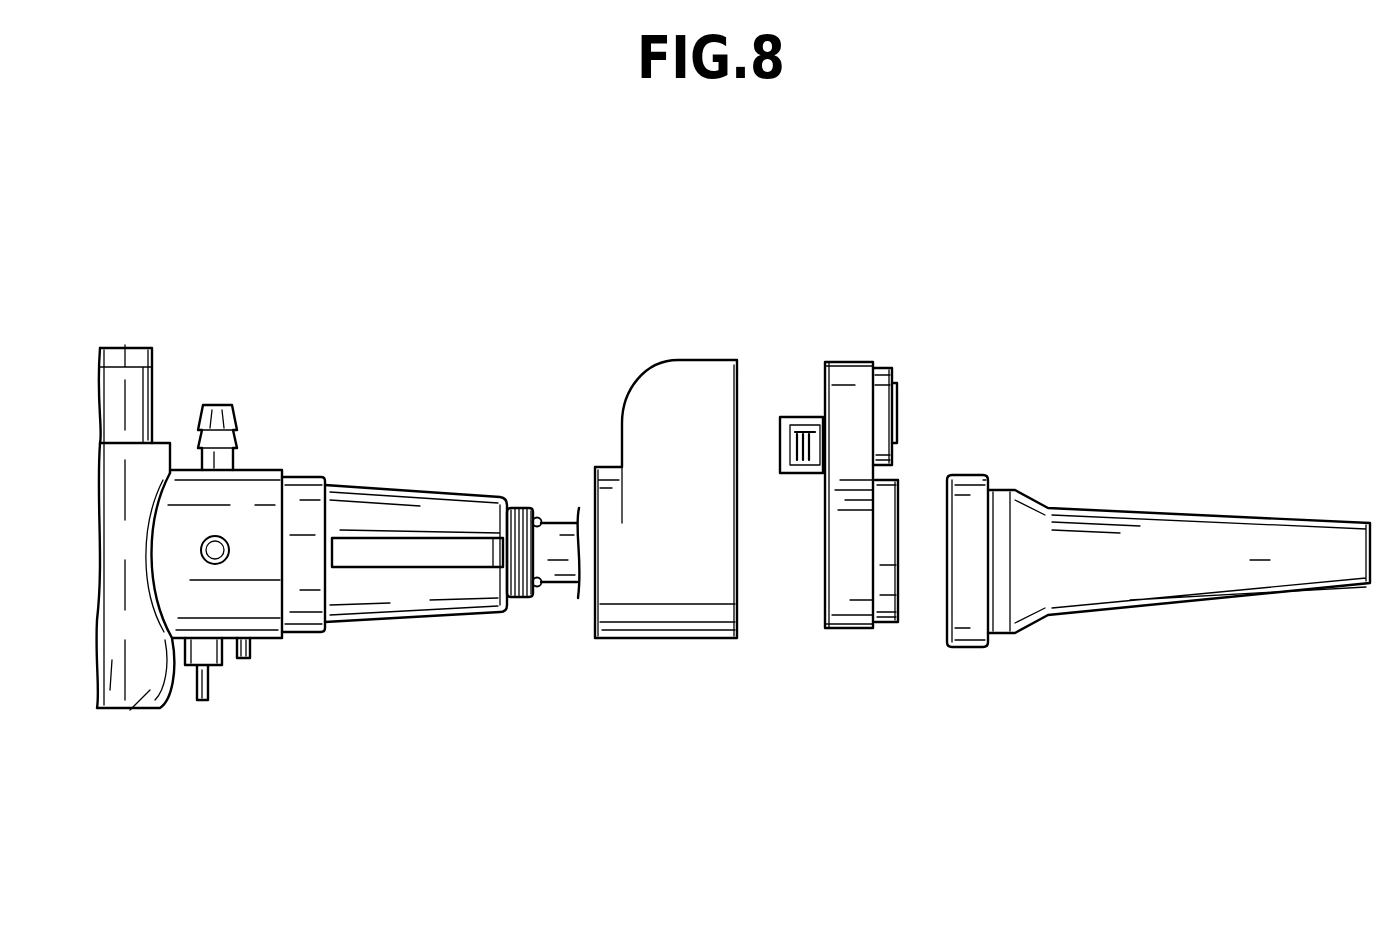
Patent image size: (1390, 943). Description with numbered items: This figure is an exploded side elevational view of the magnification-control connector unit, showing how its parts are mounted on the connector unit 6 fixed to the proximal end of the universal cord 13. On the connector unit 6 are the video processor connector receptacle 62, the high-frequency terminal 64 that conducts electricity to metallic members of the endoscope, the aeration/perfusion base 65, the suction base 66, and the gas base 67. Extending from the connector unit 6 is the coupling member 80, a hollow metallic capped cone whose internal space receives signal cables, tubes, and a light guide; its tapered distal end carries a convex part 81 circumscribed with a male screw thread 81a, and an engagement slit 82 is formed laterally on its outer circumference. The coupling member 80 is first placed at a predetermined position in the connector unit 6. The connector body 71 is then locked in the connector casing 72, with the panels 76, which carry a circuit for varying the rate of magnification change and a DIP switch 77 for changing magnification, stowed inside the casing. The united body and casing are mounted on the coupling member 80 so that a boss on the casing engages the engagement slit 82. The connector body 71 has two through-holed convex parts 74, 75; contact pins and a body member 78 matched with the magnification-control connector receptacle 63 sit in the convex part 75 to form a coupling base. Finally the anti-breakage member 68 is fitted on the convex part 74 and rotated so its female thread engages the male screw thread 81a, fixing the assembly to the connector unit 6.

The connector unit 6 is at (133, 680).
The universal cord 13 is at (560, 530).
The video processor connector receptacle 62 is at (124, 365).
The magnification-control connector receptacle 63 is at (928, 411).
The high-frequency terminal 64 is at (225, 540).
The aeration/perfusion base 65 is at (202, 705).
The suction base 66 is at (216, 405).
The gas base 67 is at (243, 660).
The anti-breakage member 68 is at (1225, 540).
The connector body 71 is at (845, 385).
The connector casing 72 is at (677, 405).
The convex part 74 is at (880, 622).
The convex part 75 is at (883, 380).
The panels 76 is at (790, 417).
The DIP switch 77 is at (800, 458).
The body member 78 is at (897, 380).
The coupling member 80 is at (403, 505).
The convex part 81 is at (517, 600).
The male screw thread 81a is at (517, 495).
The engagement slit 82 is at (407, 565).